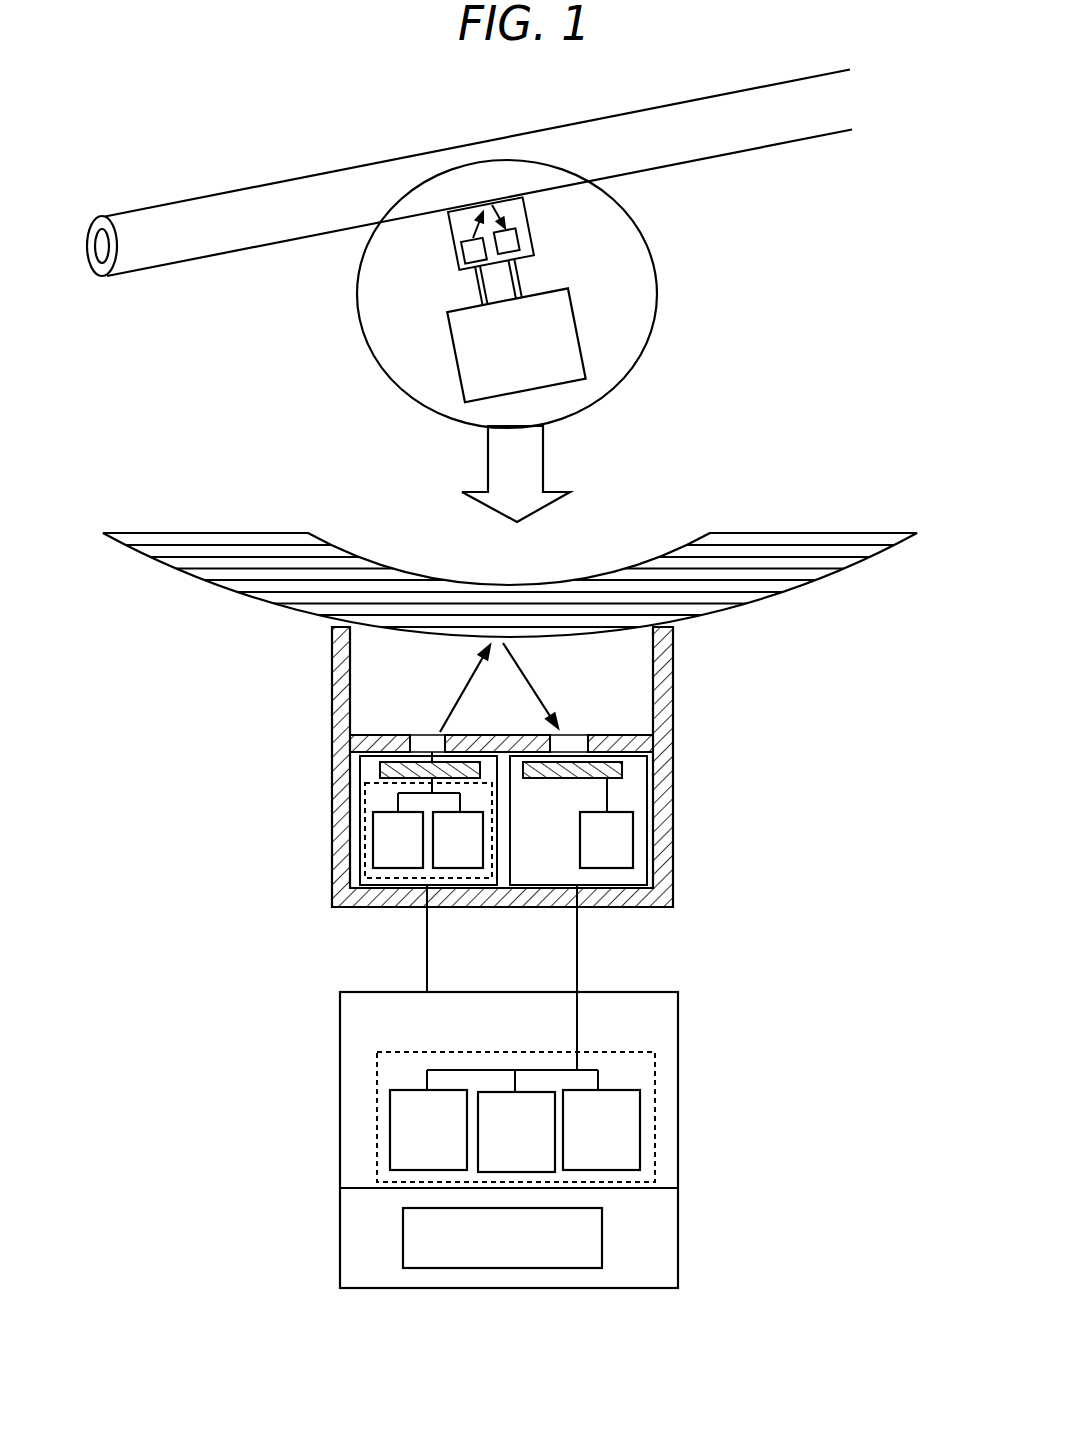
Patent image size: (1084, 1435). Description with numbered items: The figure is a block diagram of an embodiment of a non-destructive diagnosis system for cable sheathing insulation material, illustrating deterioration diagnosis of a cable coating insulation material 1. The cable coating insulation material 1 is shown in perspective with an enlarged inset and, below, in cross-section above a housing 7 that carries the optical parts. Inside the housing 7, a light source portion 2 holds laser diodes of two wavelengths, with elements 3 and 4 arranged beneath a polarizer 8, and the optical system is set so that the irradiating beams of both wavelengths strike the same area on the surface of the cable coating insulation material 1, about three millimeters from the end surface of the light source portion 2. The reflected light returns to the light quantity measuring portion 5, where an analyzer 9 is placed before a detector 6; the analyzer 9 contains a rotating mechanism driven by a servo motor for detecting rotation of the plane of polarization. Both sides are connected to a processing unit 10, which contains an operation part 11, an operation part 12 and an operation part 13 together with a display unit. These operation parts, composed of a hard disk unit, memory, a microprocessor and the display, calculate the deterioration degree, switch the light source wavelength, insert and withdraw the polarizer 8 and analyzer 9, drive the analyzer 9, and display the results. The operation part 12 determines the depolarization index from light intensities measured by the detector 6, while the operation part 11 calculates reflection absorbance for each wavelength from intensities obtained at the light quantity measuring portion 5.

The cable coating insulation material 1 is at (337, 190).
The light source portion 2 is at (464, 250).
The light emitting element 3 is at (398, 840).
The light receiving element 4 is at (458, 840).
The light quantity measuring portion 5 is at (508, 244).
The detector 6 is at (606, 840).
The housing 7 is at (533, 222).
The polarizer 8 is at (380, 768).
The analyzer 9 is at (622, 770).
The processing unit 10 is at (509, 788).
The operation part 11 is at (428, 1130).
The operation part 12 is at (516, 1132).
The operation part 13 is at (601, 1130).